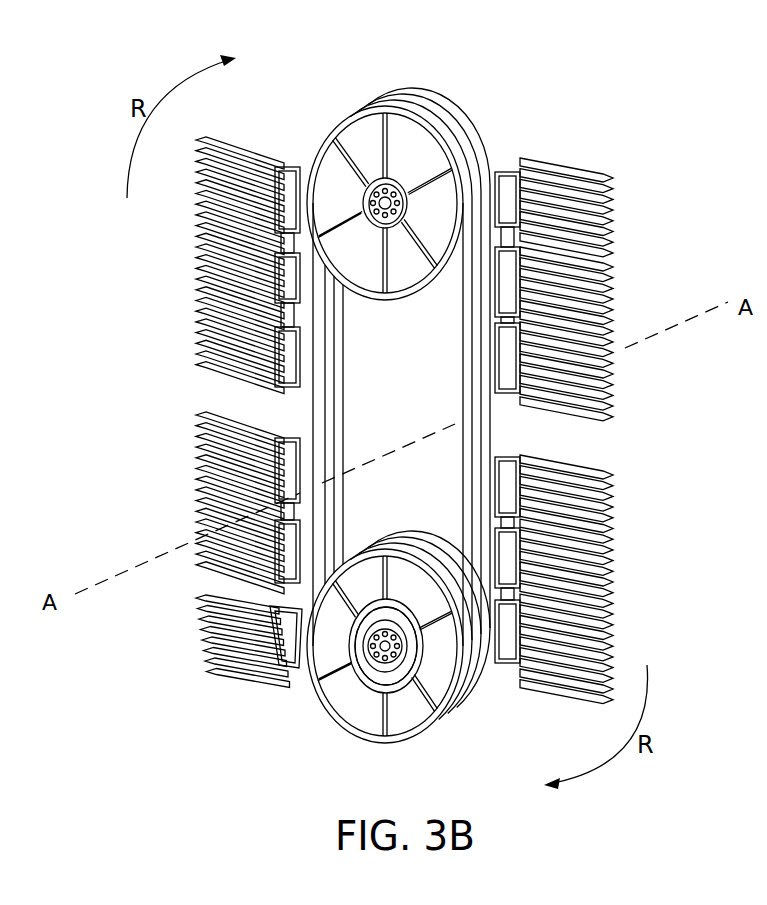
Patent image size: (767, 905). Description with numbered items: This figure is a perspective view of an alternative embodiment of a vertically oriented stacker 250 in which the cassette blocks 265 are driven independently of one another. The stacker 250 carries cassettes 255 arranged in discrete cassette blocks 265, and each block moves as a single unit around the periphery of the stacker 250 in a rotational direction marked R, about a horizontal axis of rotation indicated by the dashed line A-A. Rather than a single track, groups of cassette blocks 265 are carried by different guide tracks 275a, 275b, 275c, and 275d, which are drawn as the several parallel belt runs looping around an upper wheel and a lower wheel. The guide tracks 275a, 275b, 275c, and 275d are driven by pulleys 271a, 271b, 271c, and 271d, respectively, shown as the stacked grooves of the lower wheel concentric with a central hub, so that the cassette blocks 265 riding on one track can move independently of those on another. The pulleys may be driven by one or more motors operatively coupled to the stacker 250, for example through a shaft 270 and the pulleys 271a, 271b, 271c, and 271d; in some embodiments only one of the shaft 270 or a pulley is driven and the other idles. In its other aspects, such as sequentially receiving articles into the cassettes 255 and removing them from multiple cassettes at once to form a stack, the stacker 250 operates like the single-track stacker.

The vertical stacker 250 is at (590, 103).
The cassettes 255 is at (604, 186).
The cassette blocks 265 is at (613, 514).
The shaft 270 is at (356, 685).
The pulley 271a is at (390, 620).
The pulley 271b is at (378, 662).
The pulley 271c is at (443, 600).
The pulley 271d is at (396, 636).
The guide track 275a is at (482, 152).
The guide track 275b is at (452, 128).
The guide track 275c is at (417, 112).
The guide track 275d is at (380, 93).